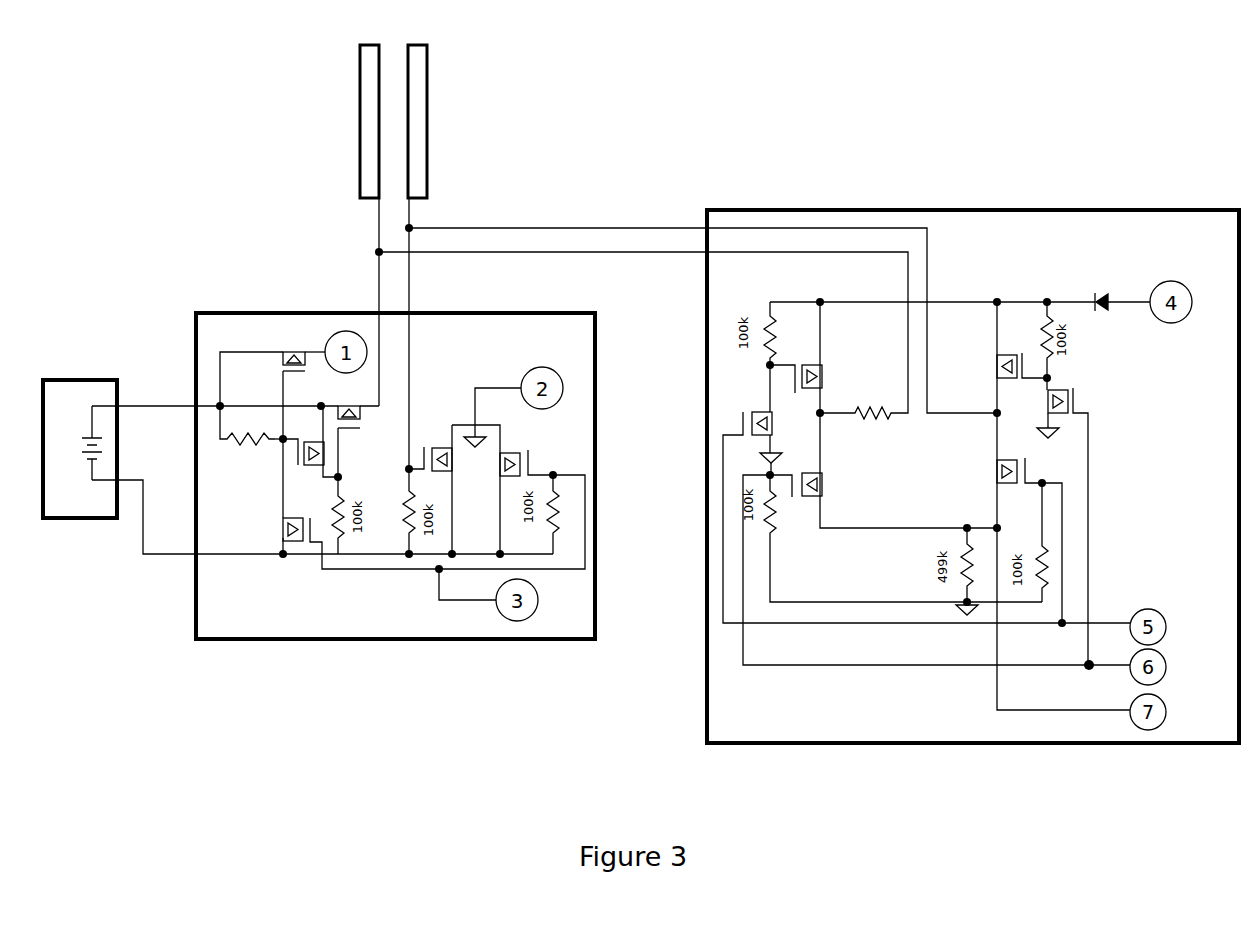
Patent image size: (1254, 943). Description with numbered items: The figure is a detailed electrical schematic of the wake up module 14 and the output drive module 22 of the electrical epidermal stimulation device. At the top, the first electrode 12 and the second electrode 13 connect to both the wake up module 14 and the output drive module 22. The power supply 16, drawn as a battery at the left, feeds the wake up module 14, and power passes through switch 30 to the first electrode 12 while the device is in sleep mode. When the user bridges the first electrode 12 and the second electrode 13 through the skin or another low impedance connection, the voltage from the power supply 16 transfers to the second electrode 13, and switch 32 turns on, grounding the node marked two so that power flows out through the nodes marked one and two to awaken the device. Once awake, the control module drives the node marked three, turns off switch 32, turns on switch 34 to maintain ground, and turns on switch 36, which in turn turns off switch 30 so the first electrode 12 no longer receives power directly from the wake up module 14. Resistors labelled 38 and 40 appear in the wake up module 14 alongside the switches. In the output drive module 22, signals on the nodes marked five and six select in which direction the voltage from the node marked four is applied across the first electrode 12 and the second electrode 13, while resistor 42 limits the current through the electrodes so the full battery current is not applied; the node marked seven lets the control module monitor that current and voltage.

The first electrode 12 is at (365, 78).
The second electrode 13 is at (420, 80).
The wake up module 14 is at (260, 614).
The power supply 16 is at (59, 415).
The output drive module 22 is at (986, 251).
The switch 30 is at (349, 431).
The switch 32 is at (430, 448).
The switch 34 is at (526, 451).
The switch 36 is at (279, 536).
The resistor 38 is at (252, 440).
The transistor 40 is at (304, 351).
The resistor 42 is at (857, 416).